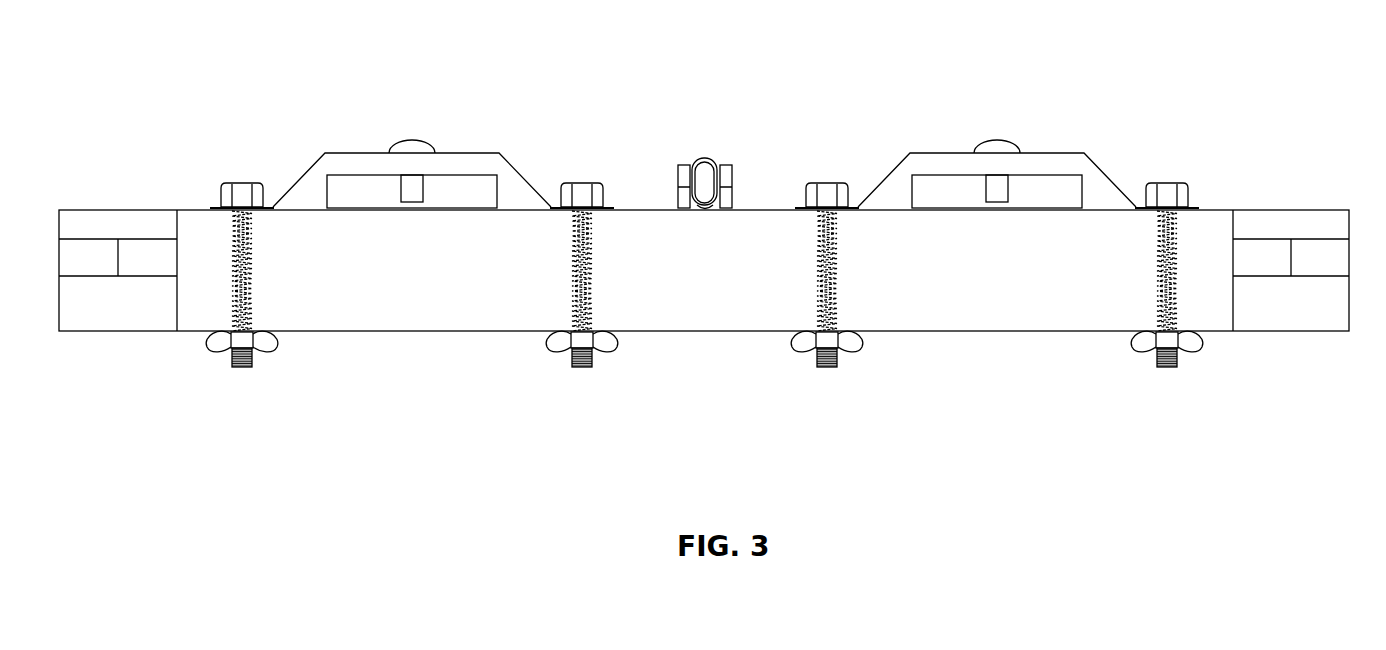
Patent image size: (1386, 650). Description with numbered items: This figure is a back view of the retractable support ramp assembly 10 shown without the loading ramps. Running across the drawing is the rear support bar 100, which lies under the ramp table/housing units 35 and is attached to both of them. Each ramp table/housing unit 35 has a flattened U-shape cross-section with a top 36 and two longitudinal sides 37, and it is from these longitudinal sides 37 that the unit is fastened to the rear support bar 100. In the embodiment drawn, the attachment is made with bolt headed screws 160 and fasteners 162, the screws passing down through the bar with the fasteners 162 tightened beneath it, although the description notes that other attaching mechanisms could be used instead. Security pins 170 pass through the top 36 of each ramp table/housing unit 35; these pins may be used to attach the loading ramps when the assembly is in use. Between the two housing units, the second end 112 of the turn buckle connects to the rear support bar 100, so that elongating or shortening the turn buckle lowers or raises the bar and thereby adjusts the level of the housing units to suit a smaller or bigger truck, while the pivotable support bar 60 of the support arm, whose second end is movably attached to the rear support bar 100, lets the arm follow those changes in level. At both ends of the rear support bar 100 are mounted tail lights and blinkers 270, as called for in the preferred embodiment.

The support ramp assembly 10 is at (1196, 33).
The ramp table/housing unit 35 is at (729, 146).
The top 36 is at (480, 160).
The longitudinal side 37 is at (212, 208).
The pivotable support bar 60 is at (257, 273).
The rear support bar 100 is at (460, 311).
The second end of turn buckle 112 is at (705, 166).
The bolt headed screw 160 is at (704, 269).
The fastener 162 is at (212, 348).
The security pin 170 is at (410, 145).
The tail lights and blinkers 270 is at (121, 312).